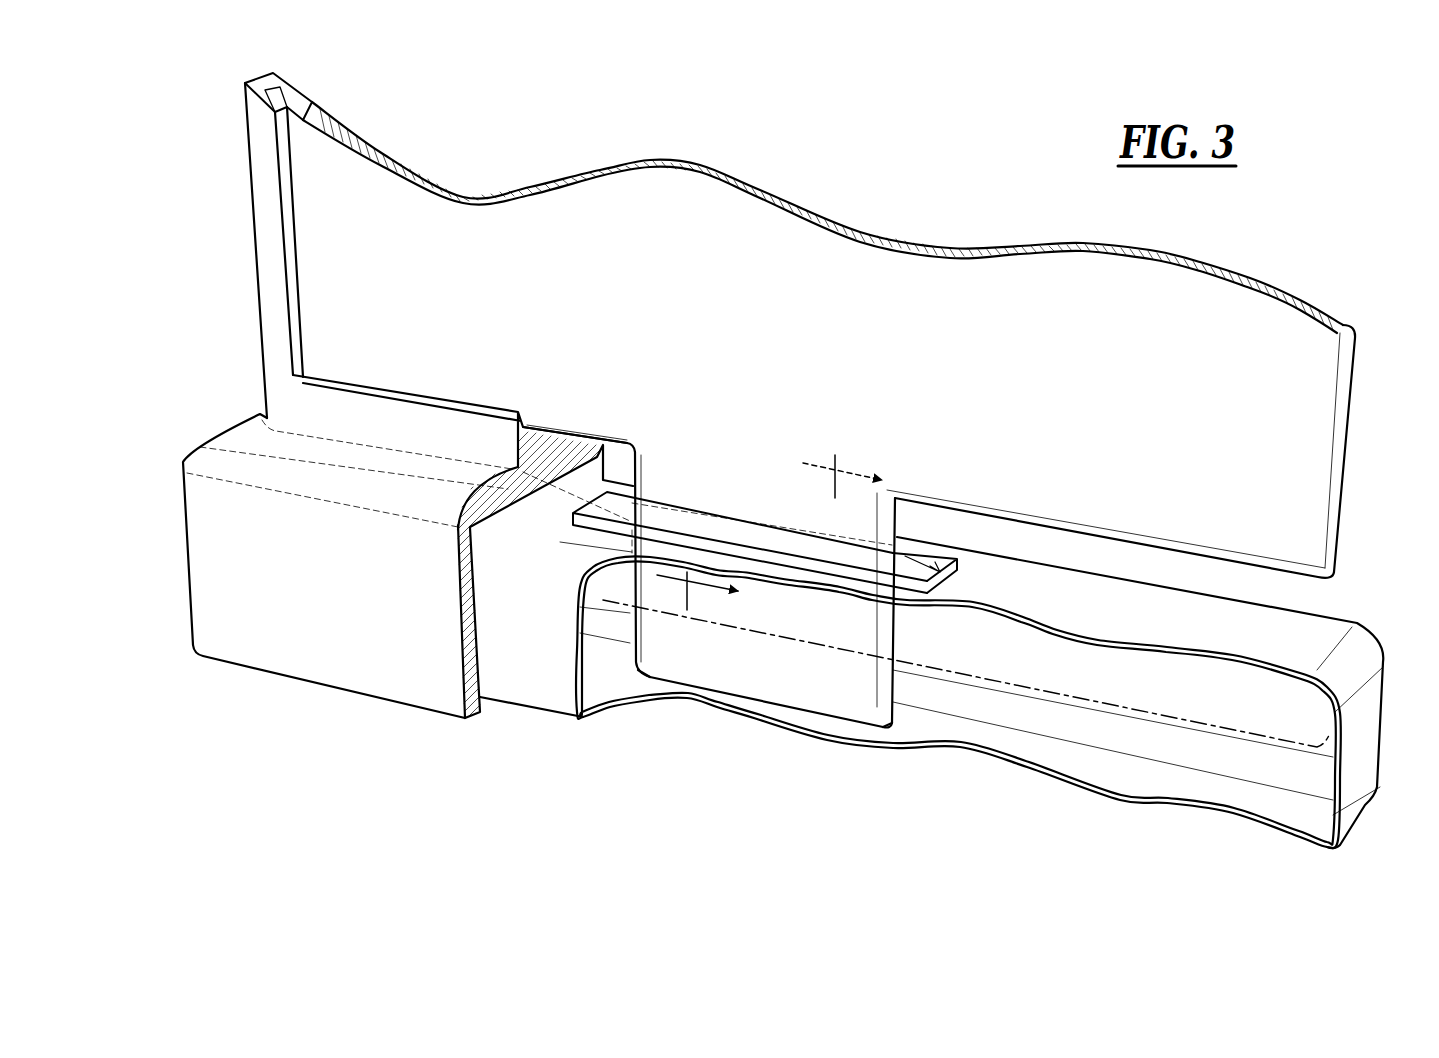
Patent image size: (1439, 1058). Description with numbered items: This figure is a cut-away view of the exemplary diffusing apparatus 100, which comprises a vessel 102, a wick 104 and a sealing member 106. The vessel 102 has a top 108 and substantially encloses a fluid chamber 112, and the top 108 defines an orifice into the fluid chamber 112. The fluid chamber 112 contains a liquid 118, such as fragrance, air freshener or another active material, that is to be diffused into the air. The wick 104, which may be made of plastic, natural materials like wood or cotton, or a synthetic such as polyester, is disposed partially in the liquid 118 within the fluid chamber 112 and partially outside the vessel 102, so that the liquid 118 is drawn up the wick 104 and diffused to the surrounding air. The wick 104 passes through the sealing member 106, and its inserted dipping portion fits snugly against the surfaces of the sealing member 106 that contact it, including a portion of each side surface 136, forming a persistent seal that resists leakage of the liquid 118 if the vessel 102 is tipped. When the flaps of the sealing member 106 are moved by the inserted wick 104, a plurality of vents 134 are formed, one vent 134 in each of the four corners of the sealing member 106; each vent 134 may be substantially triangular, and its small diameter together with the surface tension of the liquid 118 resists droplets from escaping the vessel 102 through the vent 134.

The diffusing apparatus 100 is at (226, 70).
The vessel 102 is at (1362, 652).
The wick 104 is at (1297, 467).
The sealing member 106 is at (918, 574).
The top 108 is at (408, 665).
The fluid chamber 112 is at (1303, 703).
The liquid 118 is at (1307, 750).
The vent 134 is at (573, 514).
The side surface 136 is at (912, 545).